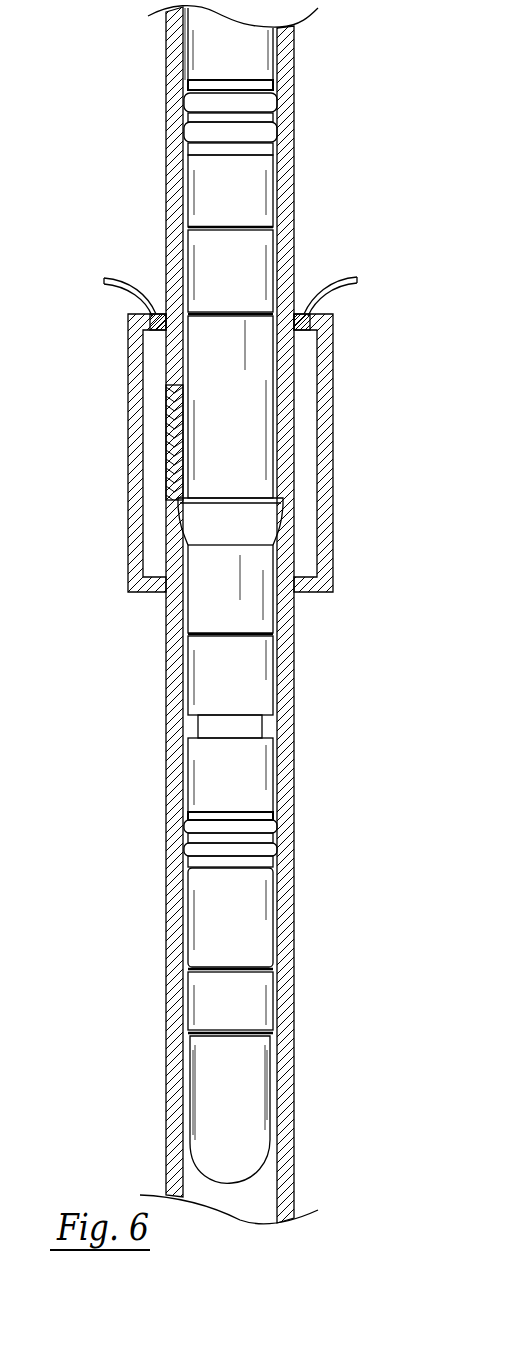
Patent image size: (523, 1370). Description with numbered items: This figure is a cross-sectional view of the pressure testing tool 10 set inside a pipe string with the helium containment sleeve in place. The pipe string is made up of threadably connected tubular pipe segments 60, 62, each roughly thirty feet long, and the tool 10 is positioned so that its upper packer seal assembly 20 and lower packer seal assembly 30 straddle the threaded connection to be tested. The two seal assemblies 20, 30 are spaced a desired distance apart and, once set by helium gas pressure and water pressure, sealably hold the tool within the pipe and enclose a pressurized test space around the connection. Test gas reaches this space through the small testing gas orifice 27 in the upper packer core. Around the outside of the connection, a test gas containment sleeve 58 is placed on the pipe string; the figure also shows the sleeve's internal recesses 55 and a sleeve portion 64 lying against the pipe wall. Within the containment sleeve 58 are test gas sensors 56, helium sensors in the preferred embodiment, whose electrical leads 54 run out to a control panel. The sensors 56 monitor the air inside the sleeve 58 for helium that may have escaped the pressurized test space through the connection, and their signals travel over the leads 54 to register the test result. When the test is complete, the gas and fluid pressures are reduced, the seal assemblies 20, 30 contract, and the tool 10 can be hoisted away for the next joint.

The pressure testing tool 10 is at (239, 595).
The upper packer seal assembly 20 is at (174, 117).
The testing gas orifice 27 is at (230, 407).
The lower packer seal assembly 30 is at (174, 832).
The electrical leads 54 is at (118, 280).
The clamp recess 55 is at (153, 527).
The test gas sensors 56 is at (157, 297).
The test gas containment sleeve 58 is at (136, 443).
The tubular pipe segment 60 is at (173, 690).
The tubular pipe segment 62 is at (288, 70).
The sleeve 64 is at (173, 458).